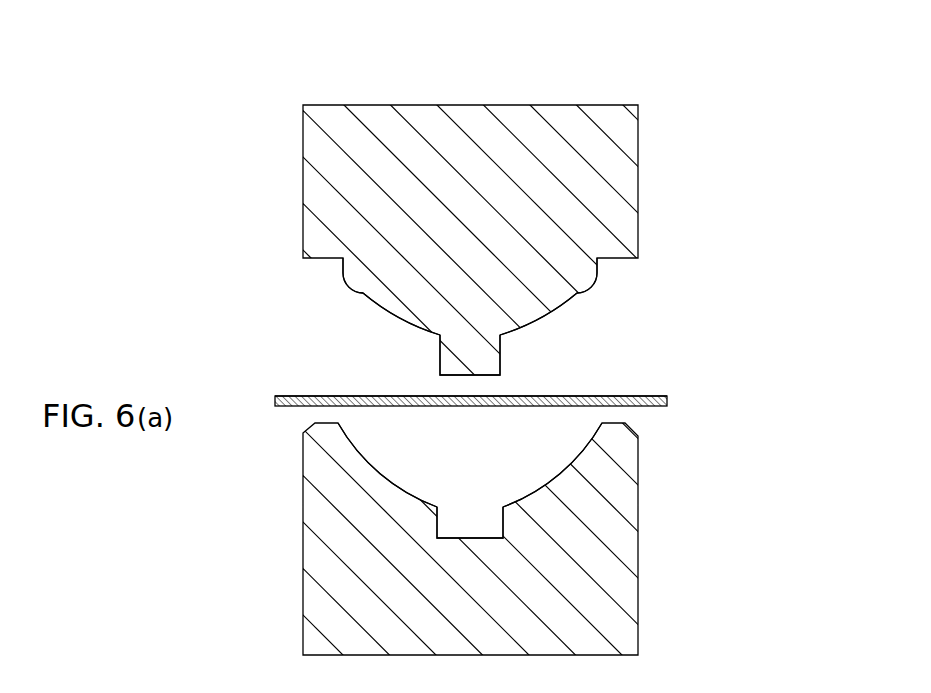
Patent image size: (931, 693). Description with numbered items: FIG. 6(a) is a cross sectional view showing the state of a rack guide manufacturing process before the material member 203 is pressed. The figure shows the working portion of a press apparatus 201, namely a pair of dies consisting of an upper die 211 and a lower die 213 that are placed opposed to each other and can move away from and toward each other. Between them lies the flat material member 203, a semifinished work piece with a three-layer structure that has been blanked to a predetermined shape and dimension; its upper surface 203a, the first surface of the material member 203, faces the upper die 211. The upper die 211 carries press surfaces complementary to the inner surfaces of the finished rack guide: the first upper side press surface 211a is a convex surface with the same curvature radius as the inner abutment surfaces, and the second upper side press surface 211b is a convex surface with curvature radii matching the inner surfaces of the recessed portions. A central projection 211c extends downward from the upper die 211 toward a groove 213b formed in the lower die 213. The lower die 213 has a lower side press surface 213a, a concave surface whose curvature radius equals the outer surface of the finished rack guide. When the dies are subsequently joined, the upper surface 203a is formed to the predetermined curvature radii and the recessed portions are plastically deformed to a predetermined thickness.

The press apparatus 201 is at (600, 85).
The upper die 211 is at (600, 187).
The first upper side press surface 211a is at (548, 318).
The second upper side press surface 211b is at (600, 277).
The projection of upper die 211c is at (440, 358).
The material member 203 is at (667, 400).
The upper surface 203a is at (582, 395).
The lower die 213 is at (600, 583).
The lower side press surface 213a is at (368, 470).
The groove of lower die 213b is at (442, 530).